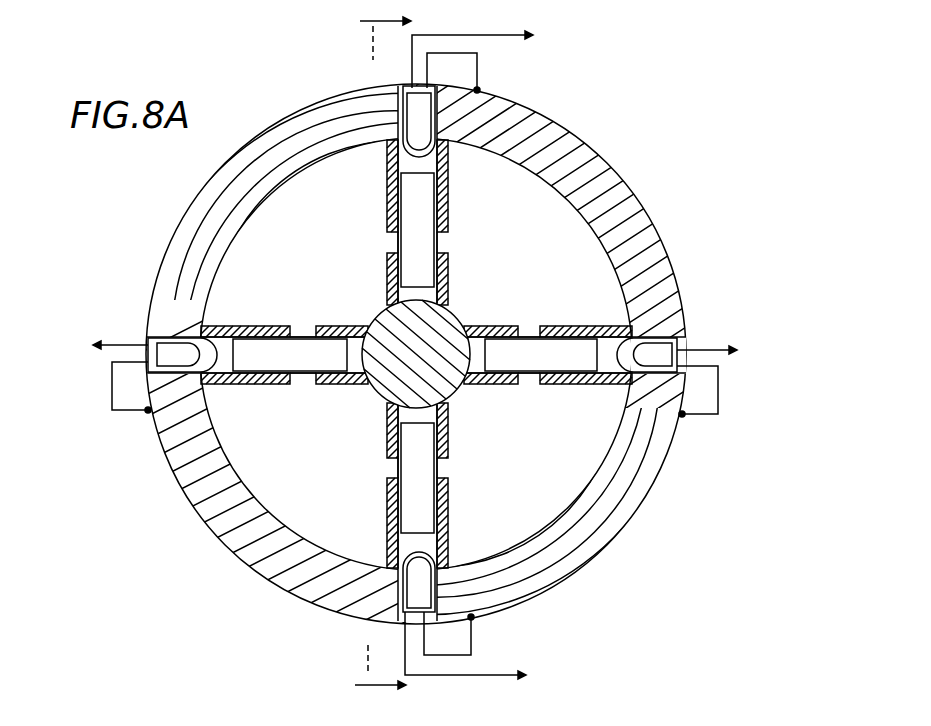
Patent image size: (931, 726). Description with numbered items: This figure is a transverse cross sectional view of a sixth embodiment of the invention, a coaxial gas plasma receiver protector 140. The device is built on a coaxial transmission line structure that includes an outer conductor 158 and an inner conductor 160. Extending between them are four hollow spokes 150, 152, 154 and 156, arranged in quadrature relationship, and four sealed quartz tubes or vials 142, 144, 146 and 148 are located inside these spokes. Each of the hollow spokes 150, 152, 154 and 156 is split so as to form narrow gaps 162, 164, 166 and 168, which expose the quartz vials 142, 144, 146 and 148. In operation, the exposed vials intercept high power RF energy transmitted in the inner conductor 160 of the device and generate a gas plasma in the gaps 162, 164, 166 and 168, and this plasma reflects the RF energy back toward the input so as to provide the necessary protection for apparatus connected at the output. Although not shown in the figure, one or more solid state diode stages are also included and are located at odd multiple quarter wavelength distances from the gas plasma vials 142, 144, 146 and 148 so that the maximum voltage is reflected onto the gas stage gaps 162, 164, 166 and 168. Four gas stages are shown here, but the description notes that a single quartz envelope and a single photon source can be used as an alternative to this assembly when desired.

The coaxial gas plasma receiver protector 140 is at (418, 363).
The sealed quartz tube or vial 142 is at (272, 347).
The sealed quartz tube or vial 144 is at (405, 507).
The sealed quartz tube or vial 146 is at (547, 360).
The sealed quartz tube or vial 148 is at (422, 202).
The hollow spoke 150 is at (272, 388).
The hollow spoke 152 is at (443, 528).
The hollow spoke 154 is at (572, 328).
The hollow spoke 156 is at (387, 177).
The outer conductor 158 is at (622, 190).
The inner conductor 160 is at (453, 395).
The narrow gap 162 is at (302, 326).
The narrow gap 164 is at (388, 468).
The narrow gap 166 is at (527, 330).
The narrow gap 168 is at (388, 241).